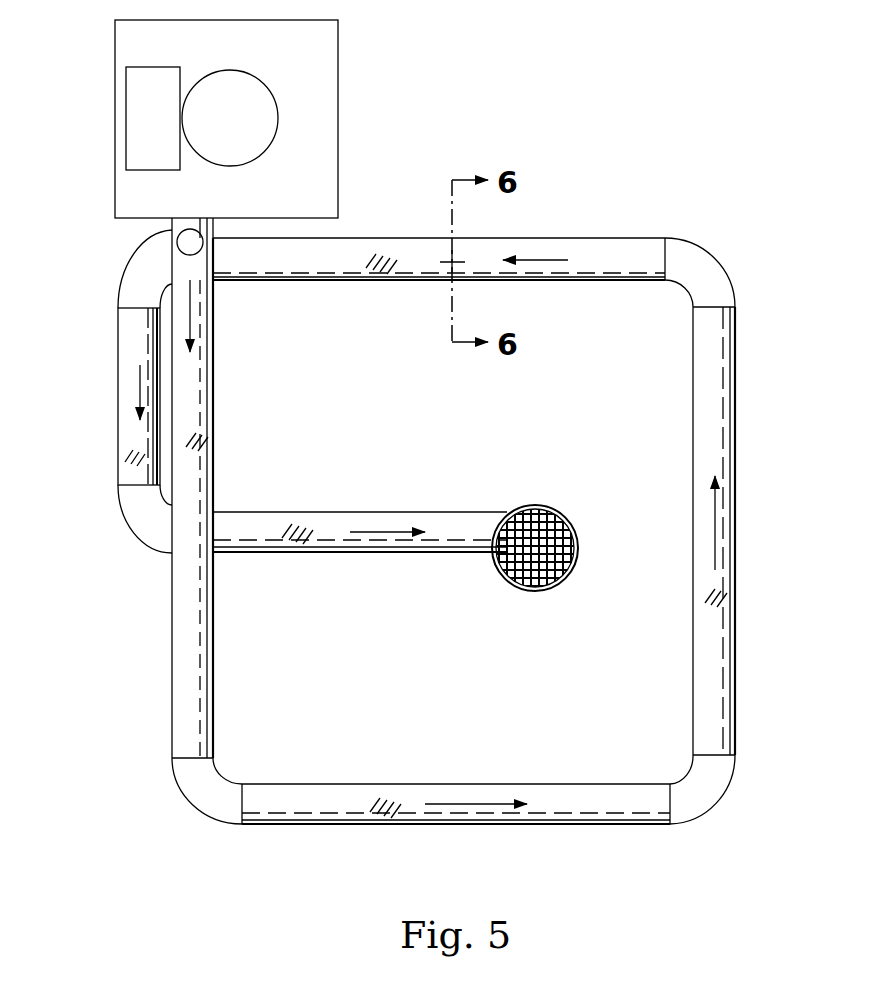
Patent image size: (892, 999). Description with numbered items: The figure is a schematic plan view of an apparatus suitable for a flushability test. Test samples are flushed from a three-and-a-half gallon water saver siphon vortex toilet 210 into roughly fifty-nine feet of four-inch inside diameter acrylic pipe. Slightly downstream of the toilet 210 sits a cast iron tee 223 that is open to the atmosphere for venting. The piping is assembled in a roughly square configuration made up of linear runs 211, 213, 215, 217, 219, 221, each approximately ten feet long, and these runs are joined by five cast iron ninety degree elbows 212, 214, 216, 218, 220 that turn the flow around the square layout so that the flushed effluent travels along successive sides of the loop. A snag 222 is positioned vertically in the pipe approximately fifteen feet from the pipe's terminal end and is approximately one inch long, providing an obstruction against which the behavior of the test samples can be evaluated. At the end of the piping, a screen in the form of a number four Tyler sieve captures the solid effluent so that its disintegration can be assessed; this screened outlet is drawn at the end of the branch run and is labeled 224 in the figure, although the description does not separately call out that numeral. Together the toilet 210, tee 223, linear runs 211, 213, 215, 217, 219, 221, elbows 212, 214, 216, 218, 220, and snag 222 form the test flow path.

The water saver siphon vortex toilet 210 is at (262, 105).
The linear run 211 is at (178, 622).
The cast iron ninety degree elbow 212 is at (200, 800).
The linear run 213 is at (455, 815).
The cast iron ninety degree elbow 214 is at (712, 797).
The linear run 215 is at (728, 518).
The cast iron ninety degree elbow 216 is at (708, 262).
The linear run 217 is at (528, 240).
The cast iron ninety degree elbow 218 is at (140, 268).
The linear run 219 is at (128, 348).
The cast iron ninety degree elbow 220 is at (147, 530).
The linear run 221 is at (378, 517).
The snag 222 is at (452, 262).
The cast iron tee 223 is at (178, 238).
The diffuser/filter outlet 224 is at (560, 512).